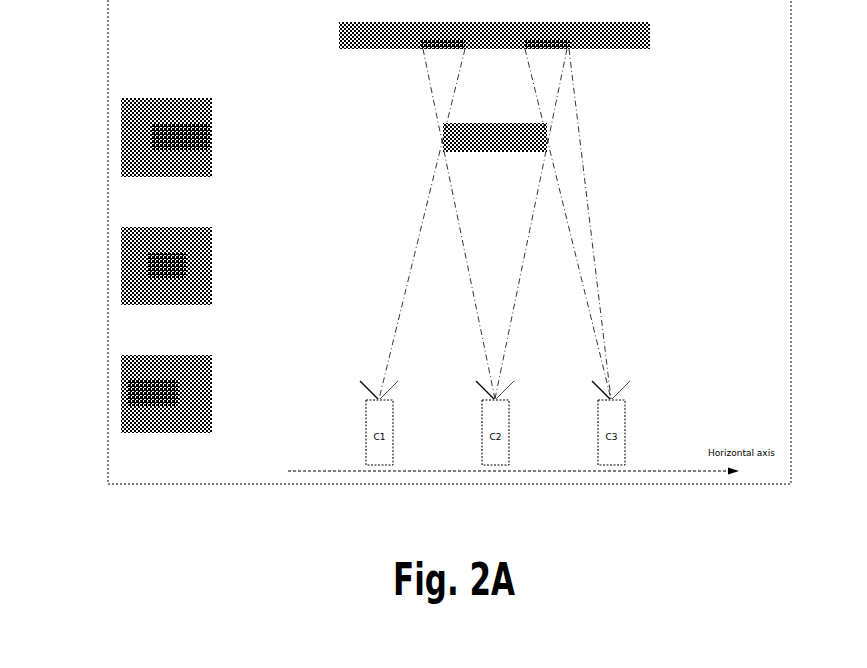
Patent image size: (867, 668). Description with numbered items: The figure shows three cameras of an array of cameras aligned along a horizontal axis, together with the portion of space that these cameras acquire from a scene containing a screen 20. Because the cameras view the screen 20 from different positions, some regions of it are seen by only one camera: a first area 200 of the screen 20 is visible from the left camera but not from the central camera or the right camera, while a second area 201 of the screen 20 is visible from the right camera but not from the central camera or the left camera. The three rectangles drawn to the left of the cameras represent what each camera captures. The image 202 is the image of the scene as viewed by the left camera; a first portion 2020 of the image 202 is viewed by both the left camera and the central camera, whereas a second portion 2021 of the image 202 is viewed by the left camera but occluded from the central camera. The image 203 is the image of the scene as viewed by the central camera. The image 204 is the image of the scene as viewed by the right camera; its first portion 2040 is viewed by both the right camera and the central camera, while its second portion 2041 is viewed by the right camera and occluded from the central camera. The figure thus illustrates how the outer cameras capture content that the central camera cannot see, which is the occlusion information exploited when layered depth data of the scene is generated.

The screen 20 is at (641, 40).
The first area 200 is at (436, 52).
The second area 201 is at (556, 52).
The image 202 is at (124, 143).
The first portion 2020 is at (183, 137).
The second portion 2021 is at (157, 131).
The image 203 is at (124, 257).
The image 204 is at (205, 434).
The first portion 2040 is at (130, 392).
The second portion 2041 is at (175, 393).